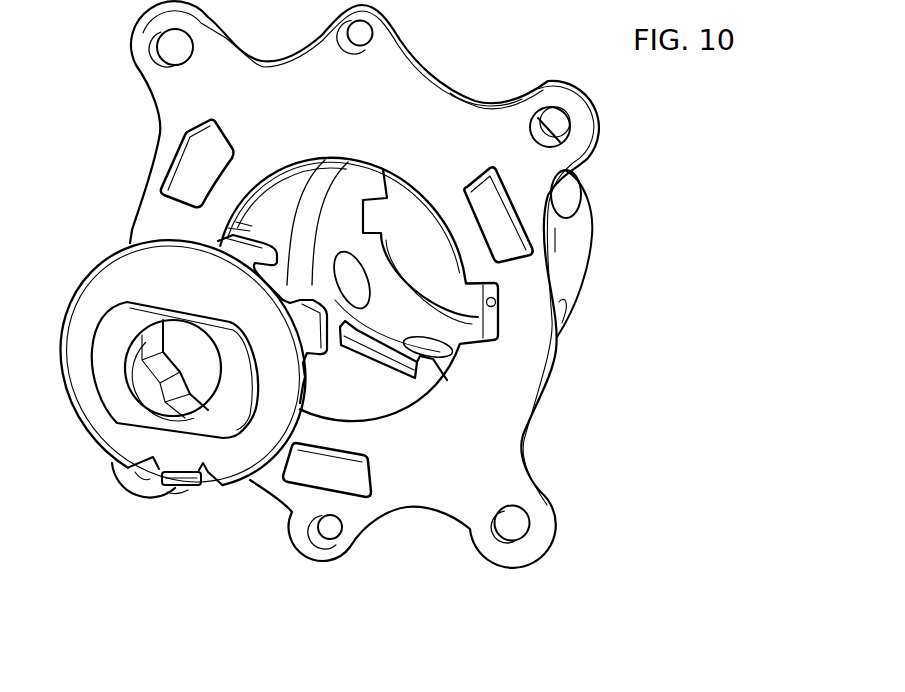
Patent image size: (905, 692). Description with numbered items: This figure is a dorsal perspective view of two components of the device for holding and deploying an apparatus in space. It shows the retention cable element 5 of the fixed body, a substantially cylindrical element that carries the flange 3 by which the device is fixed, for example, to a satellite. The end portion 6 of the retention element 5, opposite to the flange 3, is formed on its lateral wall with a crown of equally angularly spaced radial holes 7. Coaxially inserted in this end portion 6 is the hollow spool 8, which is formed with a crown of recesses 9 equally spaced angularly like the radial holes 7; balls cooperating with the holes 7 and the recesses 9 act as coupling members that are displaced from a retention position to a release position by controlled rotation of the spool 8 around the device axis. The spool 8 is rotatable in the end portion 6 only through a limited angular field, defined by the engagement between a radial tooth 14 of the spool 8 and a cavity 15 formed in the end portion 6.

The flange 3 is at (175, 88).
The retention cable element 5 is at (287, 183).
The end portion 6 is at (583, 247).
The radial holes 7 is at (362, 170).
The hollow spool 8 is at (86, 272).
The recesses 9 is at (278, 258).
The radial tooth 14 is at (188, 490).
The cavity 15 is at (390, 372).